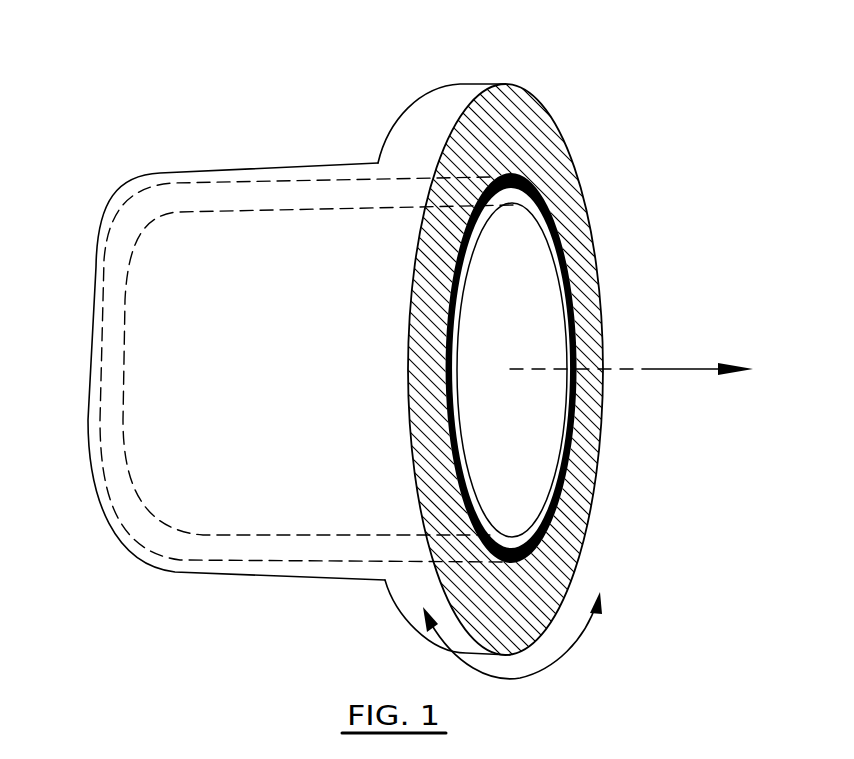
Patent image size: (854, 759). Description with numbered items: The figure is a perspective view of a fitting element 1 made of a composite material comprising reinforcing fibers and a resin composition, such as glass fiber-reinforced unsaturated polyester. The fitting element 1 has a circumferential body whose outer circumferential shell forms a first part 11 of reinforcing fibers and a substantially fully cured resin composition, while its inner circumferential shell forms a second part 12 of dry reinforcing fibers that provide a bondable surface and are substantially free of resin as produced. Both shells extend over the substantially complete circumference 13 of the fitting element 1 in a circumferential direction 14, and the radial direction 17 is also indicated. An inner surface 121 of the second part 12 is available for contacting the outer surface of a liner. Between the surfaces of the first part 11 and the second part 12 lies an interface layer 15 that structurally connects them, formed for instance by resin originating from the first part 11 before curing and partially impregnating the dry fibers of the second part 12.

The fitting element 1 is at (272, 94).
The first part 11 is at (235, 180).
The second part 12 is at (188, 202).
The inner surface 121 is at (262, 212).
The circumference 13 is at (603, 425).
The circumferential direction 14 is at (512, 652).
The interface layer 15 is at (382, 178).
The radial direction 17 is at (631, 353).